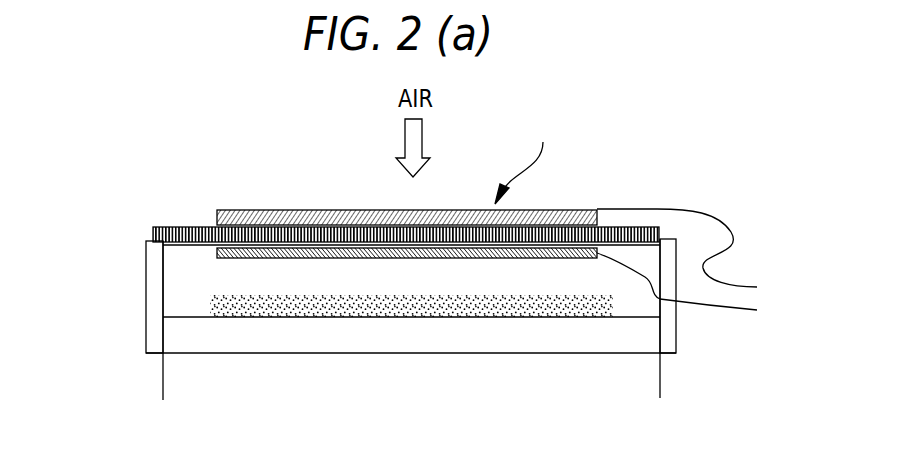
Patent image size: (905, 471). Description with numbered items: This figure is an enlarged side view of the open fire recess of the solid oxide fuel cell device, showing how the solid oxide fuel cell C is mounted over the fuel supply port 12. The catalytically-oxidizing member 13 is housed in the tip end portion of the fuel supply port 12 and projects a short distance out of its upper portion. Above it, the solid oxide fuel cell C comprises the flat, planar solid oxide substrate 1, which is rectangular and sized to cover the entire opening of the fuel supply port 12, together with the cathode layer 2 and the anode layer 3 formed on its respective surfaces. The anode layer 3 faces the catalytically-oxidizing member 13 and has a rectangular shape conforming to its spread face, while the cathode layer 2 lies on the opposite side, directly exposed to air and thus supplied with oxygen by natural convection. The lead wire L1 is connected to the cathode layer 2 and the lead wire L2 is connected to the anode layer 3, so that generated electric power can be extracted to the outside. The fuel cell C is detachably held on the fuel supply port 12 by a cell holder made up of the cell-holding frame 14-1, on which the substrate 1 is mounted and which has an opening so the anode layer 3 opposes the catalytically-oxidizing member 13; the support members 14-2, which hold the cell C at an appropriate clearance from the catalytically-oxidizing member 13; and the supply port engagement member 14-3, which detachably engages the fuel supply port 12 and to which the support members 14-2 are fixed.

The solid oxide substrate 1 is at (167, 227).
The cathode layer 2 is at (327, 210).
The anode layer 3 is at (240, 258).
The fuel supply port 12 is at (661, 380).
The catalytically-oxidizing member 13 is at (457, 301).
The cell-holding frame 14-1 is at (200, 227).
The support members 14-2 is at (146, 299).
The supply port engagement member 14-3 is at (503, 335).
The solid oxide fuel cell C is at (524, 159).
The lead wire L1 is at (695, 256).
The lead wire L2 is at (695, 290).